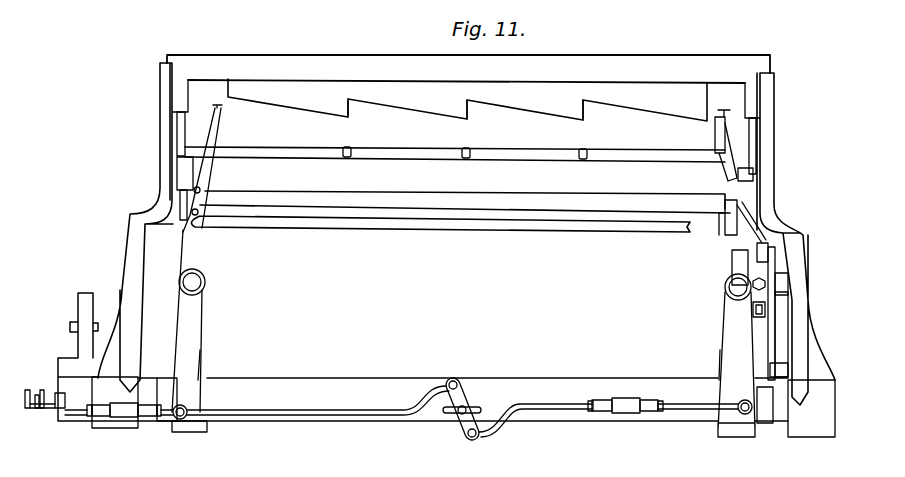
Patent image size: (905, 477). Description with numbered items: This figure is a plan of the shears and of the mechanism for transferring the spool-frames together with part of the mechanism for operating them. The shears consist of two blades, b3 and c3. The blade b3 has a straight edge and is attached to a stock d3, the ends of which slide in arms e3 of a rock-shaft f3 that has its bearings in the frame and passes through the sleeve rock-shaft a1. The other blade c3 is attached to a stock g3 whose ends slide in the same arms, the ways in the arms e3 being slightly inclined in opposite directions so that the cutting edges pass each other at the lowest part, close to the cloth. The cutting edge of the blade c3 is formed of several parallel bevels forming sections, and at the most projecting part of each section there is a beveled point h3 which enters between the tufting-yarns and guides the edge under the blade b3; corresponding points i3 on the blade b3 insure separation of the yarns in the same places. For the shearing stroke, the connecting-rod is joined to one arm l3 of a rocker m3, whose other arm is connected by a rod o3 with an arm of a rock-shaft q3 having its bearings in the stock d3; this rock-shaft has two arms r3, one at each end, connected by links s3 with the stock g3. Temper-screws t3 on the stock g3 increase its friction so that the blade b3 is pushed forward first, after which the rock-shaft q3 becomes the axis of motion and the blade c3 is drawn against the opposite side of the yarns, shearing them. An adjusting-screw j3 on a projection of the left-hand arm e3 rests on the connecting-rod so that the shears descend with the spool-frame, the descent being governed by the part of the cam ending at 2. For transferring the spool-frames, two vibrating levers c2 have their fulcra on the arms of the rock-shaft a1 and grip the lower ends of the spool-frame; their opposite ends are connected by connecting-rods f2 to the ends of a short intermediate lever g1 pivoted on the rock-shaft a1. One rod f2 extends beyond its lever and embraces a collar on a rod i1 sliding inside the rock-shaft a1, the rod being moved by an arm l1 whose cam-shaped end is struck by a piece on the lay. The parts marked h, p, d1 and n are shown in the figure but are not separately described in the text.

The stock g3 is at (468, 66).
The arms of rock-shaft e3 is at (135, 227).
The arm of rocker l3 is at (466, 99).
The links s3 is at (466, 143).
The arms of rock-shaft r3 is at (465, 188).
The shear blade c3 is at (463, 168).
The rod o3 is at (467, 100).
The points h3 is at (474, 109).
The shear blade b3 is at (455, 149).
The points i3 is at (463, 151).
The stock d3 is at (465, 193).
The rock shaft q3 is at (716, 217).
The temper-screws t3 is at (729, 217).
The adjusting-screw j3 is at (752, 232).
The rock-shaft a1 is at (446, 365).
The rock-shaft f3 is at (155, 392).
The bracket p is at (766, 395).
The hand knob h is at (48, 410).
The rod i1 is at (57, 392).
The connecting-rods f2 is at (300, 414).
The intermediate lever g1 is at (462, 409).
The vibrating levers c2 is at (463, 333).
The cam part 2 is at (460, 357).
The rod d' d1 is at (767, 313).
The rocker m3 is at (786, 325).
The block n is at (779, 371).
The arm l1 is at (768, 290).